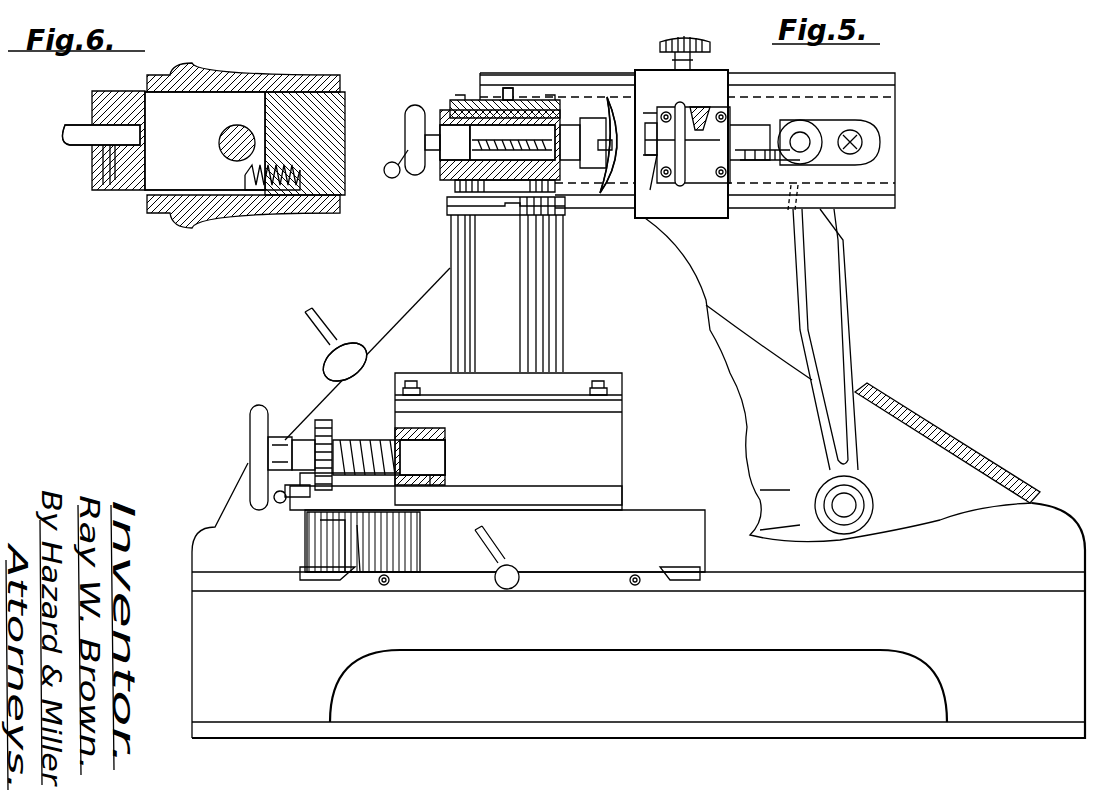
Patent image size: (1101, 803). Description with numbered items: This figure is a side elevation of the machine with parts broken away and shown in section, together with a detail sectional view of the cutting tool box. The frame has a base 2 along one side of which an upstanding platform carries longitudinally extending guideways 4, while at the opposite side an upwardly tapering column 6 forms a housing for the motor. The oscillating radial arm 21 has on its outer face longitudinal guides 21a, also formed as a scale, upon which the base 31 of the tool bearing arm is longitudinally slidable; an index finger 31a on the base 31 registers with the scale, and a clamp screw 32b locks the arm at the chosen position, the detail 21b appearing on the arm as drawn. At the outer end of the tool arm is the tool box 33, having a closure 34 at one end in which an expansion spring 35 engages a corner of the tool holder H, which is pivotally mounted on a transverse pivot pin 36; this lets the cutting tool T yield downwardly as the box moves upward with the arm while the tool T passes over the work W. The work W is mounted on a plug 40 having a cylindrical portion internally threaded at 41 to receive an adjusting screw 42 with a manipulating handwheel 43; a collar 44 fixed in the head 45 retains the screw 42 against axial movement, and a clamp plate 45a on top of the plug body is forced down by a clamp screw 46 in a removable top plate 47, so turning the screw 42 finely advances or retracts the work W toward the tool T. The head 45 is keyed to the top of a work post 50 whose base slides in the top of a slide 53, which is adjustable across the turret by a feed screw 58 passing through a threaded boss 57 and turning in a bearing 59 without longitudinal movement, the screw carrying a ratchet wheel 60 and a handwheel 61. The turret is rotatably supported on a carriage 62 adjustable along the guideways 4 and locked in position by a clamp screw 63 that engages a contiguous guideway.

In FIG. 5, the base 2 is at (700, 740).
In FIG. 5, the guideways 4 is at (930, 578).
In FIG. 5, the column 6 is at (430, 297).
In FIG. 5, the radial arm 21 is at (848, 78).
In FIG. 5, the guides / scale 21a is at (858, 190).
In FIG. 5, the link arm 21b is at (830, 178).
In FIG. 5, the base of tool bearing arm 31 is at (728, 95).
In FIG. 5, the index finger 31a is at (780, 118).
In FIG. 5, the clamp screw 32b is at (688, 40).
In FIG. 6, the tool box 33 is at (283, 82).
In FIG. 5, the tool box 33 is at (700, 108).
In FIG. 6, the closure 34 is at (340, 112).
In FIG. 6, the expansion spring 35 is at (280, 195).
In FIG. 6, the transverse pivot pin 36 is at (224, 132).
In FIG. 5, the plug 40 is at (598, 168).
In FIG. 5, the internally threaded portion 41 is at (605, 94).
In FIG. 5, the adjusting screw 42 is at (452, 212).
In FIG. 5, the handwheel 43 is at (405, 175).
In FIG. 5, the collar 44 is at (448, 122).
In FIG. 5, the head 45 is at (456, 188).
In FIG. 5, the clamp plate 45a is at (478, 108).
In FIG. 5, the clamp screw 46 is at (510, 88).
In FIG. 5, the removable top plate 47 is at (530, 100).
In FIG. 5, the work post 50 is at (535, 308).
In FIG. 5, the slide 53 is at (605, 446).
In FIG. 5, the threaded boss 57 is at (398, 430).
In FIG. 5, the feed screw 58 is at (360, 440).
In FIG. 5, the bearing 59 is at (283, 440).
In FIG. 5, the ratchet wheel 60 is at (322, 440).
In FIG. 5, the handwheel 61 is at (250, 428).
In FIG. 5, the carriage 62 is at (705, 553).
In FIG. 5, the clamp screw 63 is at (513, 585).
In FIG. 6, the tool holder H is at (193, 164).
In FIG. 5, the tool holder H is at (687, 145).
In FIG. 6, the cutting tool T is at (62, 143).
In FIG. 5, the cutting tool T is at (681, 144).
In FIG. 5, the work W is at (608, 97).